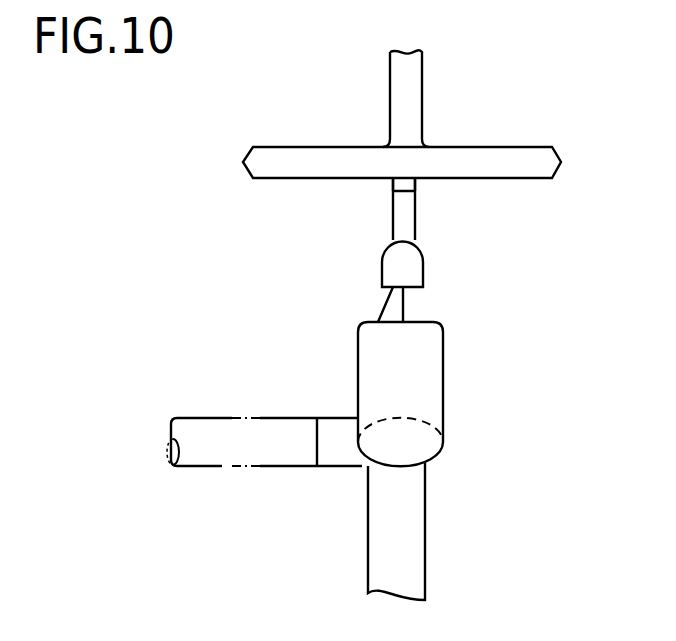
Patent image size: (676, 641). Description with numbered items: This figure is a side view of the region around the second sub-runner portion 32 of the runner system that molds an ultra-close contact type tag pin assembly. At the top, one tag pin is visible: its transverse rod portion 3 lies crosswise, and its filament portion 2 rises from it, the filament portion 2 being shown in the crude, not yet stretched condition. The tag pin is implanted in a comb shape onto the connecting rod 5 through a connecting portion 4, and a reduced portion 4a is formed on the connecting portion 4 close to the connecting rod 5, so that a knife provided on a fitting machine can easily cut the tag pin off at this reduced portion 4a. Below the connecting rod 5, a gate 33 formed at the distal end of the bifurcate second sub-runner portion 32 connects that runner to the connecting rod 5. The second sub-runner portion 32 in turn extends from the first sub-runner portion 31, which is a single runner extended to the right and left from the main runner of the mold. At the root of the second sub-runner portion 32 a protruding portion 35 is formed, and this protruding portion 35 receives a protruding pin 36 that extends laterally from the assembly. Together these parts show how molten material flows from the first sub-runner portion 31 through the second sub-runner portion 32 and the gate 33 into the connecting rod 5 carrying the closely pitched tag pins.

The filament portion 2 is at (408, 73).
The transverse rod portion 3 is at (515, 158).
The connecting portion 4 is at (415, 215).
The reduced portion 4a is at (399, 182).
The connecting rod 5 is at (413, 266).
The first sub-runner portion 31 is at (413, 557).
The second sub-runner portion 32 is at (432, 443).
The gate 33 is at (400, 307).
The protruding portion 35 is at (334, 460).
The protruding pin 36 is at (229, 458).